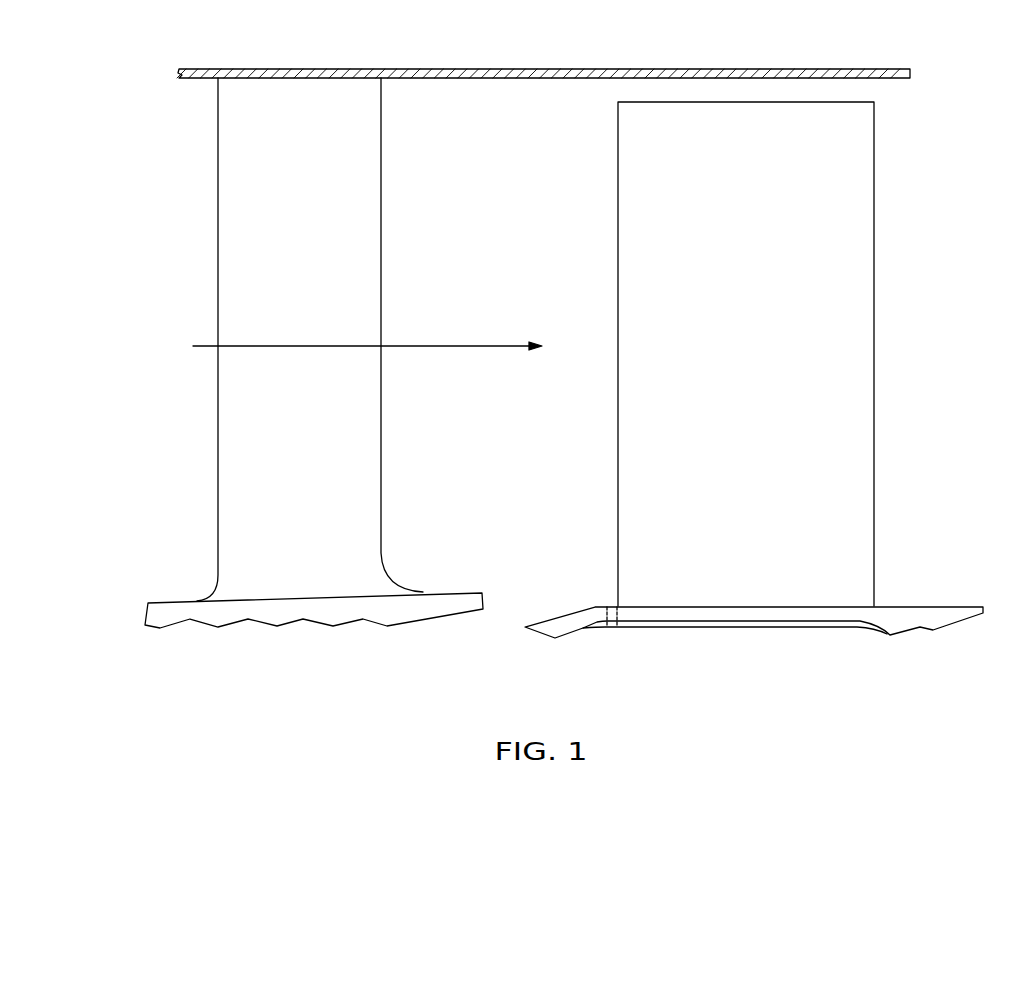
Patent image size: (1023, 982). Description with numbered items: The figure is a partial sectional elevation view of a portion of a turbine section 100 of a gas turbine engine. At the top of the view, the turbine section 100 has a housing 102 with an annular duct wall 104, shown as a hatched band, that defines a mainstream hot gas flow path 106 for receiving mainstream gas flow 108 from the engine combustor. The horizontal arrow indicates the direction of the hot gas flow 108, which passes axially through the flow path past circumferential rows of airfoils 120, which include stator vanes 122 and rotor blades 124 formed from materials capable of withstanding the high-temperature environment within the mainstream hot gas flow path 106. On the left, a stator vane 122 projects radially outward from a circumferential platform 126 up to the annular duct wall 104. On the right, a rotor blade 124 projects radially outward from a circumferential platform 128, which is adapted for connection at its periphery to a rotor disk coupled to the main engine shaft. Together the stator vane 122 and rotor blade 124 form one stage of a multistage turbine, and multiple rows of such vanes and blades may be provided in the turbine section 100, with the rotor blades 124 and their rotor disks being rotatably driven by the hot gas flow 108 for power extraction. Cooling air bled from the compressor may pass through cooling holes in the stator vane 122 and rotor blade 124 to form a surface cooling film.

The turbine section 100 is at (927, 275).
The housing 102 is at (895, 83).
The annular duct wall 104 is at (537, 80).
The mainstream hot gas flow path 106 is at (477, 100).
The mainstream gas flow 108 is at (455, 345).
The airfoils 120 is at (618, 252).
The stator vane 122 is at (232, 170).
The rotor blade 124 is at (632, 170).
The circumferential platform 126 is at (177, 601).
The circumferential platform 128 is at (930, 606).